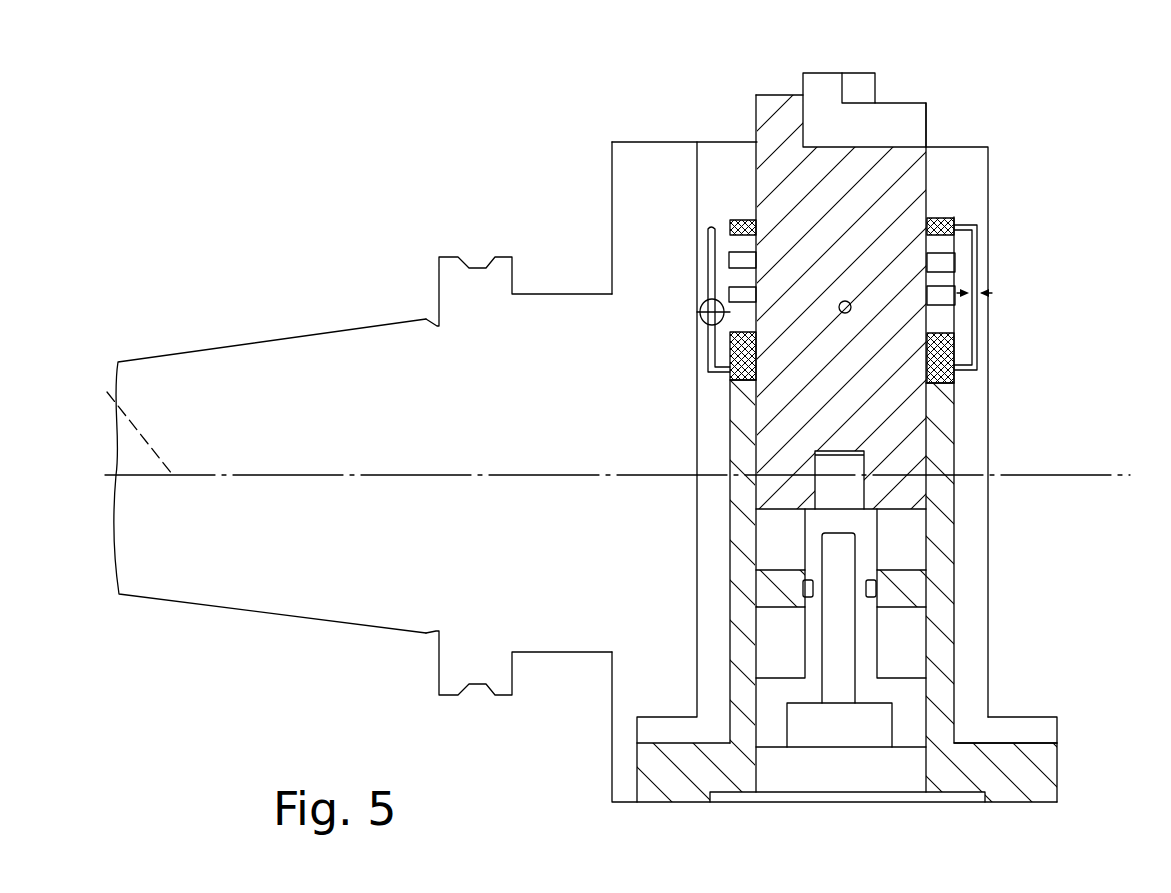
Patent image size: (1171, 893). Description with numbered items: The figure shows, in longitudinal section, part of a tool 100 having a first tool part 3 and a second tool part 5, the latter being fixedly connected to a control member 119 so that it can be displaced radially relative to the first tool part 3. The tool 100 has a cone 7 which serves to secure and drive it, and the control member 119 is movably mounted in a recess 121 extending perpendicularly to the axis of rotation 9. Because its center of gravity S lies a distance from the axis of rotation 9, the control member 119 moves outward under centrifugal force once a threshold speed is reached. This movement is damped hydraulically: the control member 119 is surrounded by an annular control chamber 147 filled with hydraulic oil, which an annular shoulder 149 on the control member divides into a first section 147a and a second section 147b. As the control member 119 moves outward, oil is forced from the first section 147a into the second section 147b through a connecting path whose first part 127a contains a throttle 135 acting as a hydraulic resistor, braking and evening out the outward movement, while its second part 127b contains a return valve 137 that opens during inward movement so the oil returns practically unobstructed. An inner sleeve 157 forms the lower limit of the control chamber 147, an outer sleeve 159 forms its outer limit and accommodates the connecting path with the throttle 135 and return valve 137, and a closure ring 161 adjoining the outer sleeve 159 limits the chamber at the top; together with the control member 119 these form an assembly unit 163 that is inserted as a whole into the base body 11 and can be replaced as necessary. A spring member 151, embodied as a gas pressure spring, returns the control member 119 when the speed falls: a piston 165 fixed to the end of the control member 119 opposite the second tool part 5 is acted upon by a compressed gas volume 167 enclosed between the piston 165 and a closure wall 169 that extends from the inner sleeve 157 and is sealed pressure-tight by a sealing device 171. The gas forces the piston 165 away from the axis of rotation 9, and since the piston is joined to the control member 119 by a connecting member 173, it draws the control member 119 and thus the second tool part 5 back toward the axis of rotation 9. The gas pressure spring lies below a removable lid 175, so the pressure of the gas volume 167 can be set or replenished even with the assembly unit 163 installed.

The tool 100 is at (462, 228).
The first tool part 3 is at (377, 360).
The second tool part 5 is at (833, 90).
The cone 7 is at (239, 377).
The axis of rotation 9 is at (106, 392).
The base body 11 is at (1036, 676).
The control member 119 is at (772, 148).
The recess 121 is at (690, 672).
The first part of connecting path 127a is at (984, 347).
The second part of connecting path 127b is at (702, 273).
The throttle 135 is at (986, 298).
The return valve 137 is at (700, 315).
The control chamber 147 is at (952, 394).
The first section of control chamber 147a is at (735, 221).
The second section of control chamber 147b is at (727, 375).
The annular shoulder 149 is at (938, 281).
The spring member 151 is at (745, 656).
The inner sleeve 157 is at (940, 460).
The outer sleeve 159 is at (968, 513).
The closure ring 161 is at (970, 187).
The assembly unit 163 is at (622, 810).
The piston 165 is at (907, 720).
The gas volume 167 is at (893, 643).
The closure wall 169 is at (888, 587).
The sealing device 171 is at (800, 590).
The connecting member 173 is at (805, 542).
The removable lid 175 is at (806, 800).
The center of gravity S is at (851, 303).